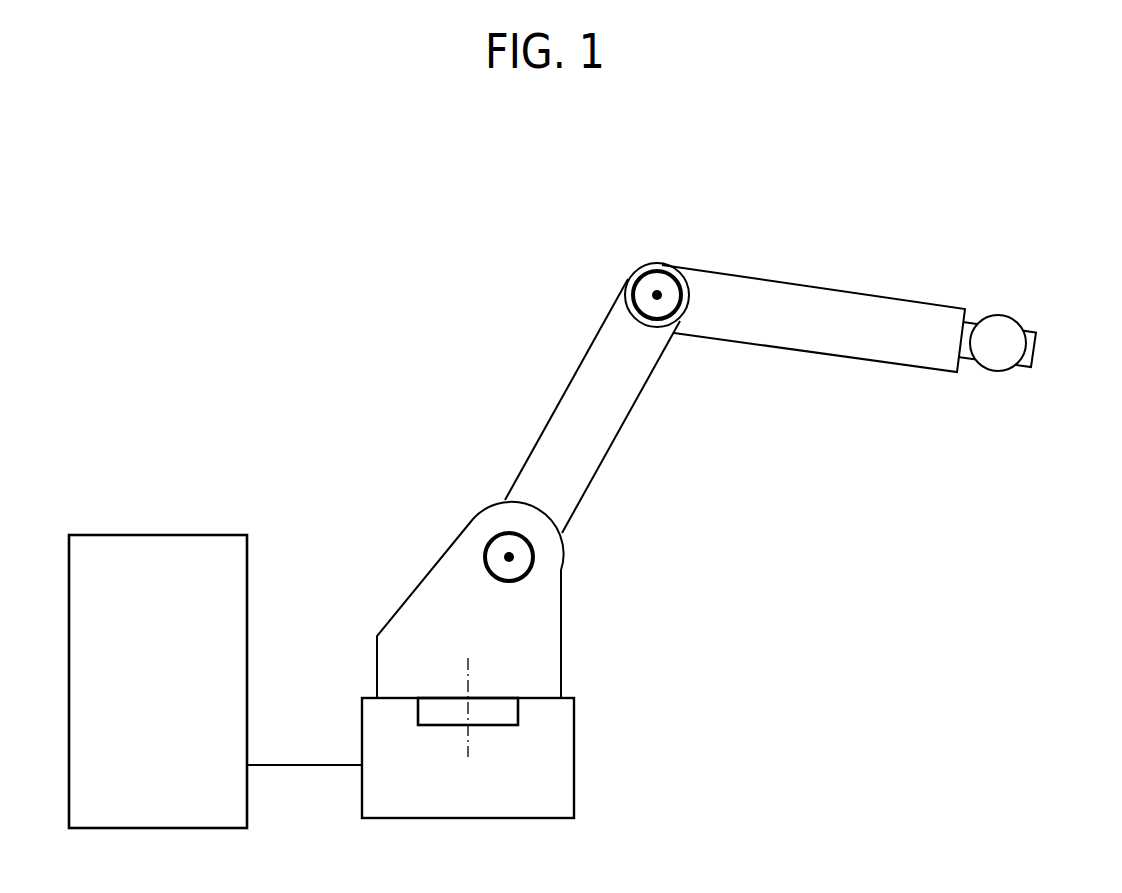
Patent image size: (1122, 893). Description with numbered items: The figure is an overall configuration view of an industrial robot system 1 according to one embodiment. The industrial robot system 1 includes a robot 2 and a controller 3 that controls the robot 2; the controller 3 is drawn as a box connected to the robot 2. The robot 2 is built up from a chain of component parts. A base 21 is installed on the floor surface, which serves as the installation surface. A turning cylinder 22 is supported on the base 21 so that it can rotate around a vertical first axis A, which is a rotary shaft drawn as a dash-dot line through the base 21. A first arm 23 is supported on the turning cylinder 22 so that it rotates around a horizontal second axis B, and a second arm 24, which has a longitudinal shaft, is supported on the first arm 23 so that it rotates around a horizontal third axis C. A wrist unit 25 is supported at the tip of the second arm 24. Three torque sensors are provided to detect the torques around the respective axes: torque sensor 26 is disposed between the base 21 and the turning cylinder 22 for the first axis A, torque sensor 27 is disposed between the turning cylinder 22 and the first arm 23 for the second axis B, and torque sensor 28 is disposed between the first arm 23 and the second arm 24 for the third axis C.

The industrial robot system 1 is at (250, 226).
The robot 2 is at (538, 334).
The controller 3 is at (155, 520).
The base 21 is at (574, 778).
The turning cylinder 22 is at (561, 638).
The first arm 23 is at (627, 428).
The second arm 24 is at (837, 357).
The wrist unit 25 is at (1042, 373).
The torque sensor 26 is at (518, 712).
The torque sensor 27 is at (495, 532).
The torque sensor 28 is at (653, 266).
The first axis A is at (476, 741).
The second axis B is at (513, 557).
The third axis C is at (655, 295).